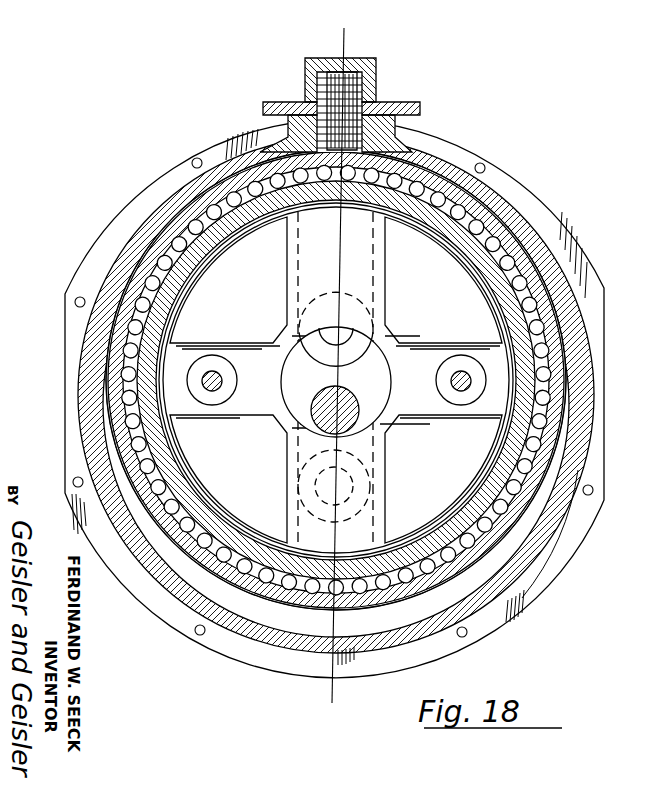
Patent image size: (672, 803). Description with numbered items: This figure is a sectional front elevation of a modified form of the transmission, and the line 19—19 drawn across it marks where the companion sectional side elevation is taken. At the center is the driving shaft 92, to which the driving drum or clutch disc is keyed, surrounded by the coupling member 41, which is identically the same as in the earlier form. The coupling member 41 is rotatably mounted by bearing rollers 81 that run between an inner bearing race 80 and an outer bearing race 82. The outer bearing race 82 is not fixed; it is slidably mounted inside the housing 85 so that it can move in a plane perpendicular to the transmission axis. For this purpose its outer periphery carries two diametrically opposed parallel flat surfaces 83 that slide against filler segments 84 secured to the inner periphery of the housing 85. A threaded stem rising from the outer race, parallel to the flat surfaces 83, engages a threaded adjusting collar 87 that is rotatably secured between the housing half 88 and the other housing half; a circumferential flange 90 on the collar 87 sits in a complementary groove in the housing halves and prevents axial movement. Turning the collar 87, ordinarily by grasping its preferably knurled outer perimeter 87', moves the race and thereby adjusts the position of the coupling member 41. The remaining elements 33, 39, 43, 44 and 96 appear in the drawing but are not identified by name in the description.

The section line 19 is at (292, 703).
The hub bore 33 is at (318, 350).
The bore in spoke 39 is at (370, 514).
The coupling member 41 is at (270, 416).
The bolt hole 43 is at (437, 379).
The bolt hole 44 is at (228, 372).
The inner bearing race 80 is at (143, 453).
The bearing rollers 81 is at (192, 554).
The outer bearing race 82 is at (236, 576).
The flat surfaces 83 is at (115, 415).
The filler segments 84 is at (92, 392).
The housing 85 is at (563, 497).
The threaded adjusting collar 87 is at (352, 71).
The outer perimeter 87' is at (370, 106).
The transmission housing half 88 is at (450, 166).
The circumferential flange 90 is at (400, 134).
The driving shaft 92 is at (348, 395).
The screw 96 is at (360, 92).